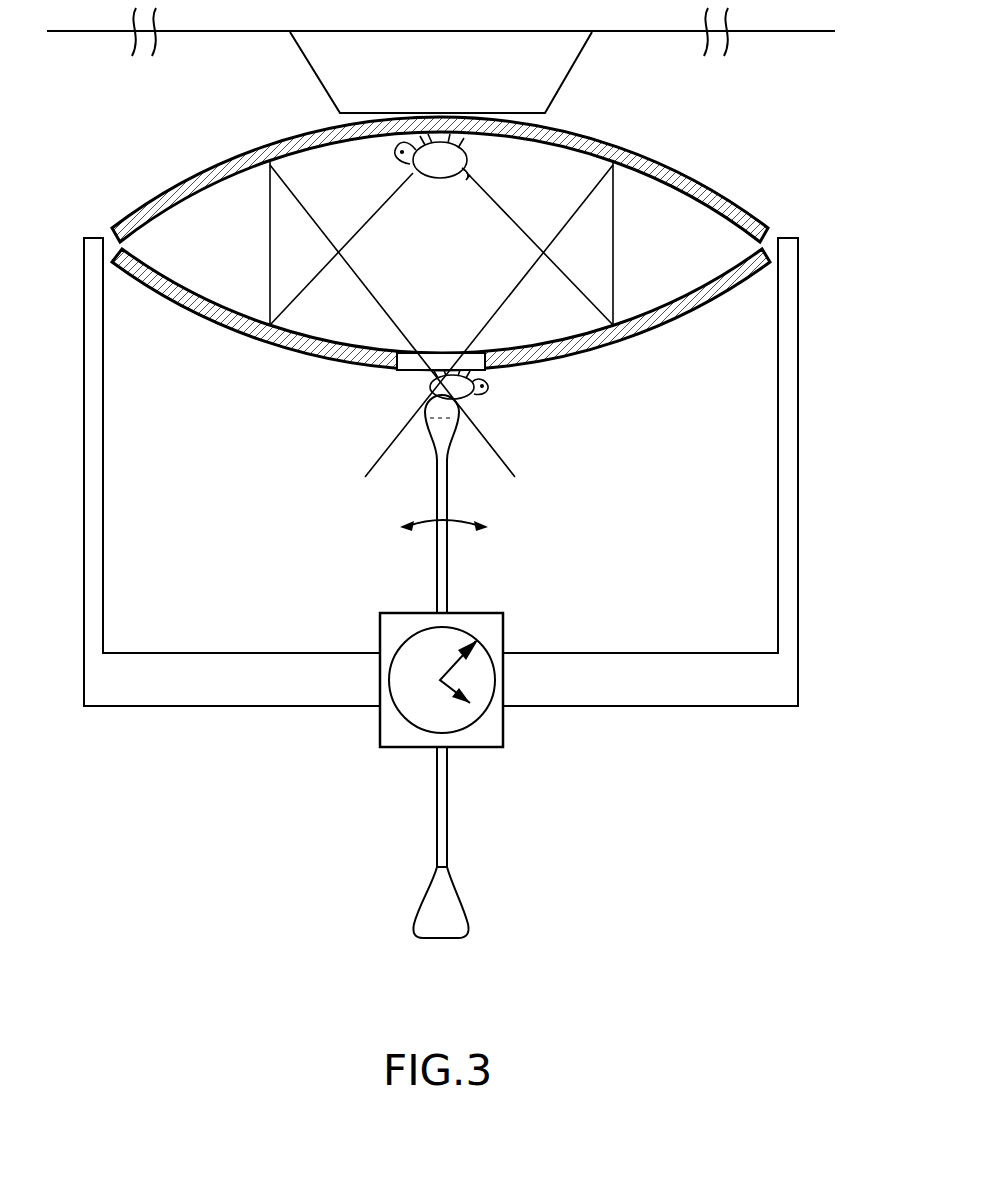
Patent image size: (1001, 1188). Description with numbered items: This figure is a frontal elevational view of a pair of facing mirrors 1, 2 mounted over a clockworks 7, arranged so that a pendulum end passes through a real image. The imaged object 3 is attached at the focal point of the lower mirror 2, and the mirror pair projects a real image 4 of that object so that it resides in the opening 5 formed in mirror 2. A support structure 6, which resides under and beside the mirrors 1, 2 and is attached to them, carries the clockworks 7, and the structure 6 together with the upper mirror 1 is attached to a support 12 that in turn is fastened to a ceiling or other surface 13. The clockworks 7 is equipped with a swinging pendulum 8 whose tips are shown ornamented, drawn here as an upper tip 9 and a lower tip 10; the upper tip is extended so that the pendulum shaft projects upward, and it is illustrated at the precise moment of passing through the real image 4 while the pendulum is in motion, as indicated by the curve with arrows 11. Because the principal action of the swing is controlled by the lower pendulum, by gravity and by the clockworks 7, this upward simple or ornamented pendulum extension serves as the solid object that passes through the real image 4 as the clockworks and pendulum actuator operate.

The mirror 1 is at (592, 135).
The mirror 2 is at (634, 340).
The imaged object 3 is at (436, 182).
The real image 4 is at (412, 410).
The opening 5 is at (450, 352).
The support structure 6 is at (660, 706).
The clockworks 7 is at (504, 630).
The pendulum 8 is at (445, 765).
The lens bulb 9 is at (456, 425).
The weight 10 is at (468, 910).
The curve with arrows 11 is at (432, 526).
The support 12 is at (547, 118).
The ceiling or other surface 13 is at (222, 32).